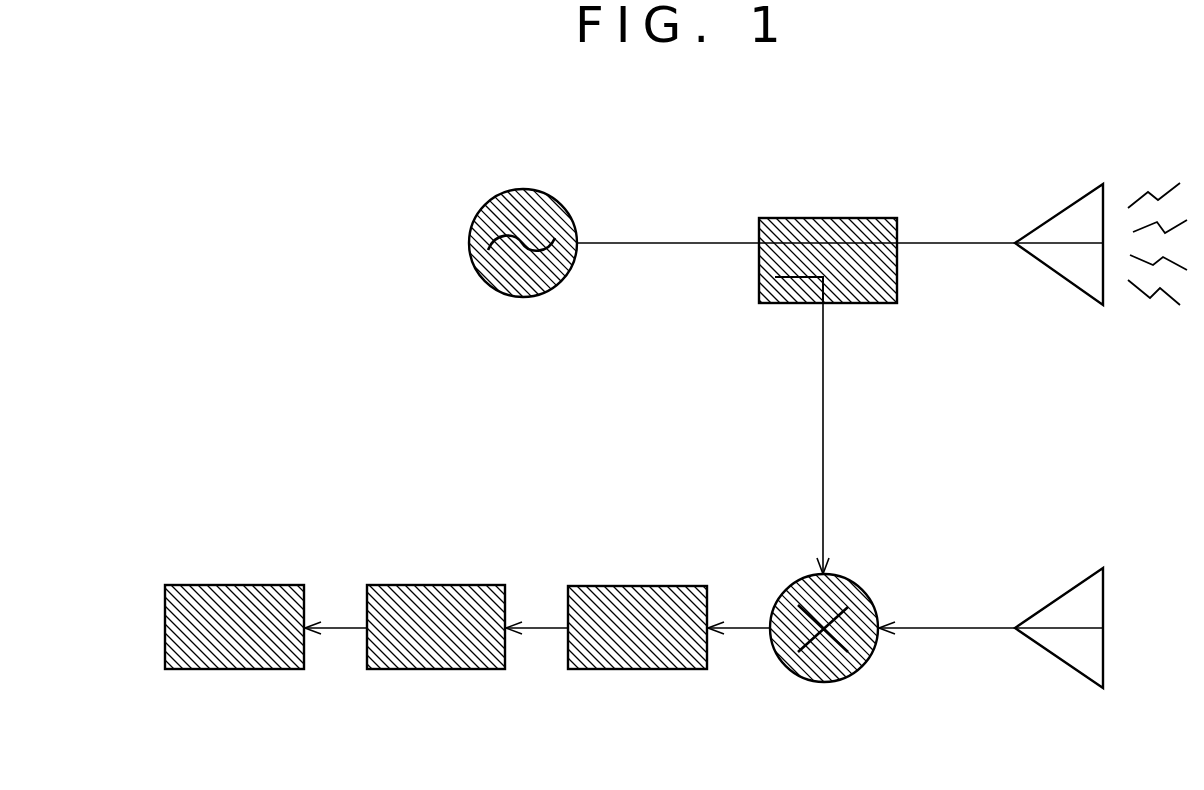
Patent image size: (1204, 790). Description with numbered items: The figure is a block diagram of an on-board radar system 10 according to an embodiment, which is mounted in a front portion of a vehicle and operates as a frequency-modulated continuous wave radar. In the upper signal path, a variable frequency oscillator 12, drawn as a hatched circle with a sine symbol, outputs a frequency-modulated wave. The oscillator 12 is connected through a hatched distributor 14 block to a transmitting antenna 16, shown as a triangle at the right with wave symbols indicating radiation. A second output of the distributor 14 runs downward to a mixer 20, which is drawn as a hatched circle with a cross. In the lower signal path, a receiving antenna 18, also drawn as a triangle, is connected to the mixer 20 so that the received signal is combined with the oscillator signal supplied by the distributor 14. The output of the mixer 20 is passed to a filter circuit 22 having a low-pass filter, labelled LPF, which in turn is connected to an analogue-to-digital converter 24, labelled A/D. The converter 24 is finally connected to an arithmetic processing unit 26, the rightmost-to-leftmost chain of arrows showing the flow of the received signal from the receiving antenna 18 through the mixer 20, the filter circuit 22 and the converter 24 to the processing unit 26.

The radar system 10 is at (330, 172).
The variable frequency oscillator 12 is at (527, 188).
The distributor 14 is at (835, 218).
The transmitting antenna 16 is at (1093, 182).
The receiving antenna 18 is at (1074, 672).
The mixer 20 is at (826, 684).
The filter circuit 22 is at (637, 586).
The analogue-to-digital (A/D) converter 24 is at (437, 585).
The arithmetic processing unit 26 is at (235, 585).